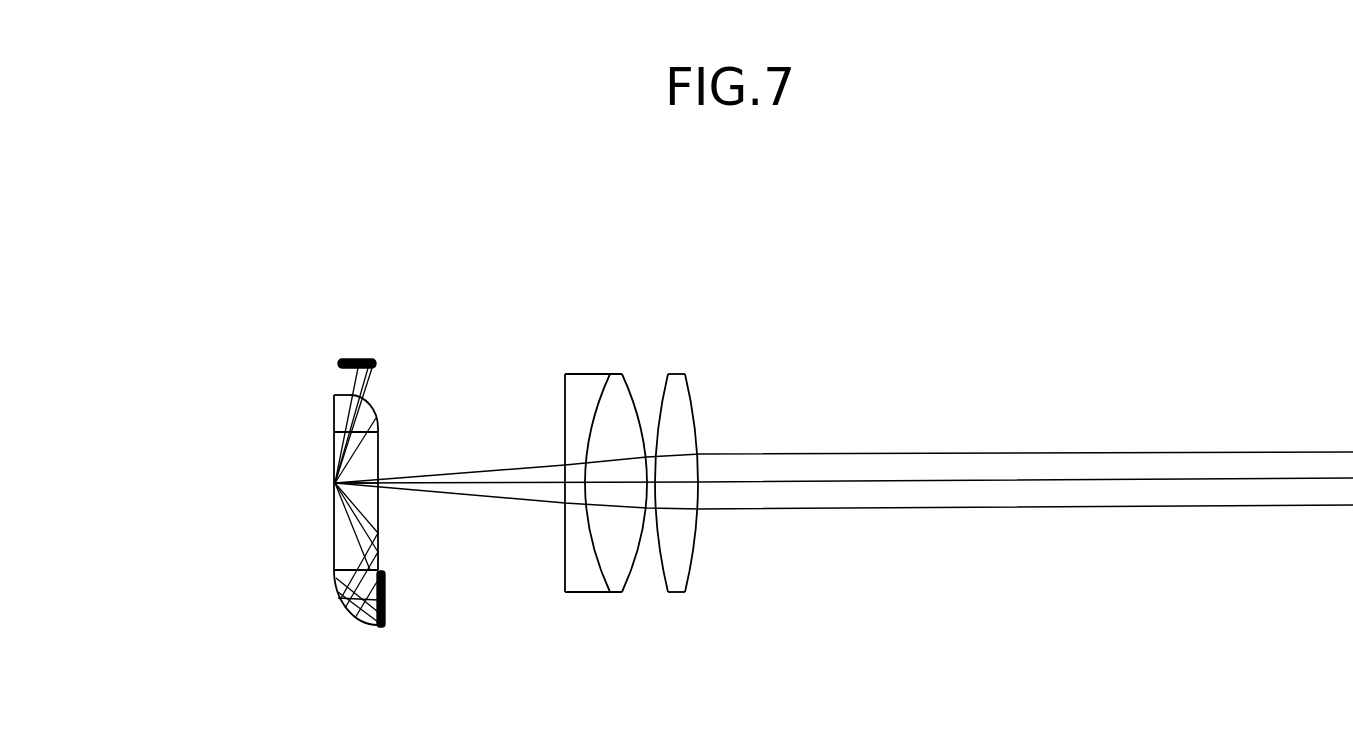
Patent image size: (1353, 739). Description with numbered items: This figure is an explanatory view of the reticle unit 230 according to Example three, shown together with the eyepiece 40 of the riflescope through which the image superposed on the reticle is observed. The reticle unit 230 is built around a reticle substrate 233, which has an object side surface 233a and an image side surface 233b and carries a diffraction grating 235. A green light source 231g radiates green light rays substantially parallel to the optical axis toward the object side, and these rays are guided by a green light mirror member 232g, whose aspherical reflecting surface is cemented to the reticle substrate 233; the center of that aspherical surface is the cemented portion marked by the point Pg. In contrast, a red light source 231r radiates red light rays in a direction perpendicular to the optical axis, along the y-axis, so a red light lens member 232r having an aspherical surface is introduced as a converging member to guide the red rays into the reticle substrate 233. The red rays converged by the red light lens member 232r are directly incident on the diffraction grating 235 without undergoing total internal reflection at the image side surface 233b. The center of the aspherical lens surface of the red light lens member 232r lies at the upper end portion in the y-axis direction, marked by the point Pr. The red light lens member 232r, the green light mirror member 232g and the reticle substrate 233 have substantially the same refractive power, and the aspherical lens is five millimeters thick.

The reticle unit 230 is at (386, 316).
The red light source 231r is at (357, 358).
The green light source 231g is at (388, 597).
The red light lens member 232r is at (363, 405).
The green light mirror member 232g is at (350, 623).
The reticle substrate 233 is at (345, 538).
The object side surface of the reticle substrate 233a is at (331, 448).
The image side surface of the reticle substrate 233b is at (387, 447).
The diffraction grating 235 is at (335, 484).
The center of the aspherical surface of the red light lens member Pr is at (329, 394).
The center of the aspherical surface of the green light mirror member Pg is at (331, 572).
The eyepiece 40 is at (703, 622).